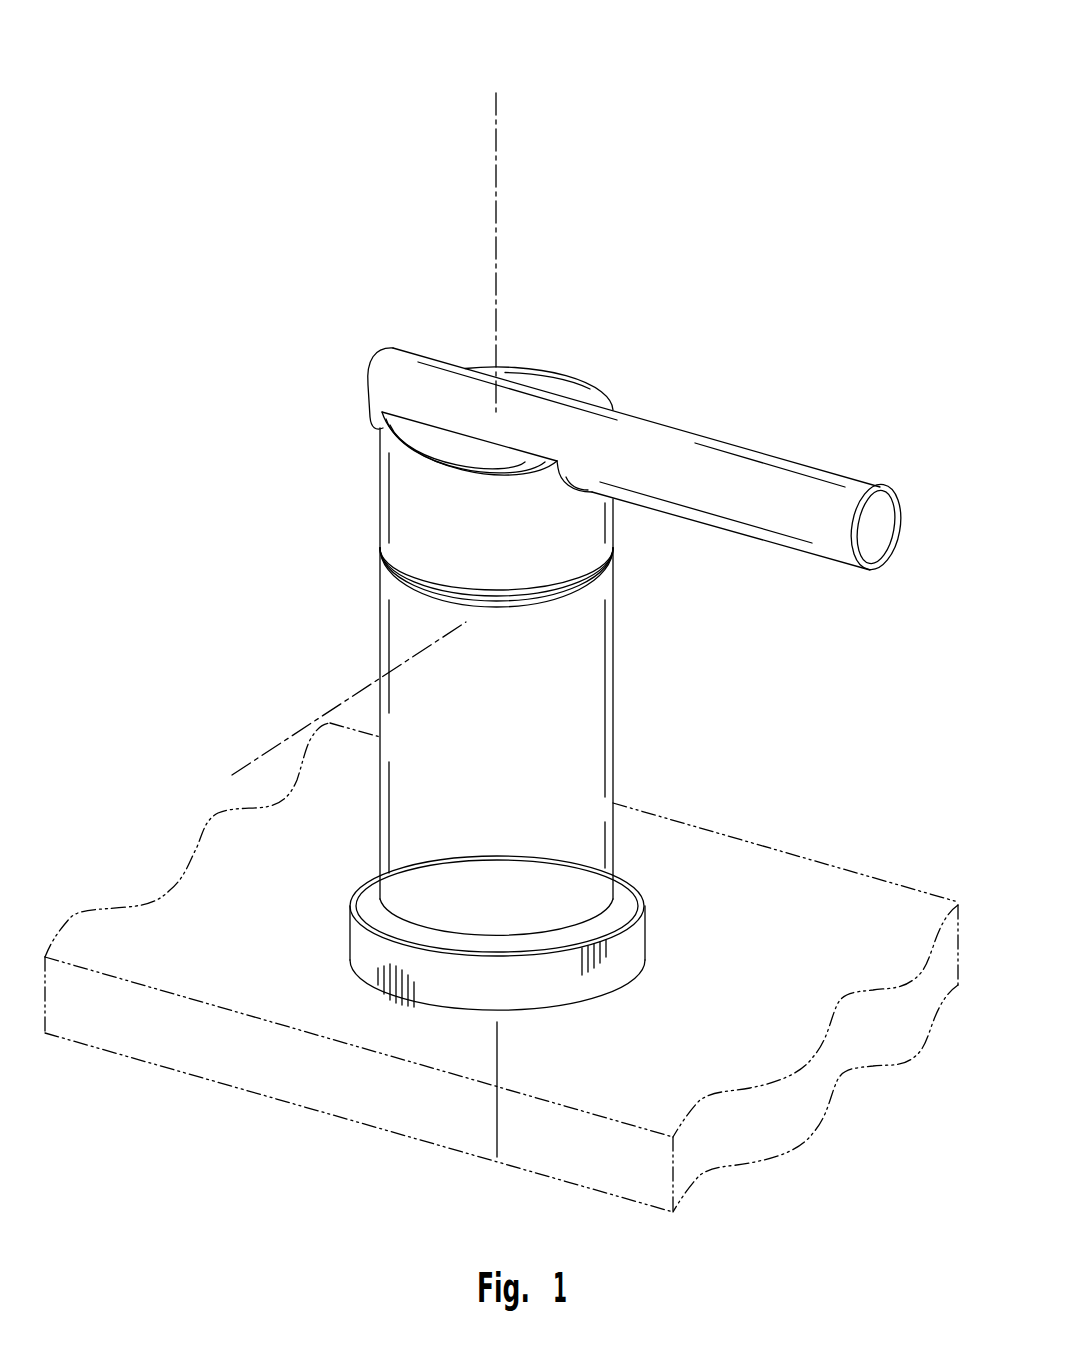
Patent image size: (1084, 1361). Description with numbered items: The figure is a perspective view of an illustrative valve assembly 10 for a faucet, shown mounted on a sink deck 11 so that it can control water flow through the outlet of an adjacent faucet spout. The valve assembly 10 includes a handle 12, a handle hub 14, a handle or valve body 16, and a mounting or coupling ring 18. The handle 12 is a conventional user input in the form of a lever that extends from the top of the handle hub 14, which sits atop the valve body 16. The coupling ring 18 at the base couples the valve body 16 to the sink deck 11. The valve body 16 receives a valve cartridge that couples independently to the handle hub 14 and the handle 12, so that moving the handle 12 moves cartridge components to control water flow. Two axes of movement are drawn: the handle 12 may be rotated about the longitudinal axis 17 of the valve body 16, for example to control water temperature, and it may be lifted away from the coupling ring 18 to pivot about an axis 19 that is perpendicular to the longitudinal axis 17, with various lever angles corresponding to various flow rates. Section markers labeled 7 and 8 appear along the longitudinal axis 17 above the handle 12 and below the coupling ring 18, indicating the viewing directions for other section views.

The valve assembly 10 is at (752, 118).
The sink deck 11 is at (850, 870).
The handle 12 is at (795, 438).
The handle hub 14 is at (360, 485).
The valve body 16 is at (634, 726).
The longitudinal axis 17 is at (497, 269).
The coupling ring 18 is at (661, 943).
The axis 19 is at (270, 748).
The section line 7 is at (485, 115).
The section line 8 is at (508, 183).